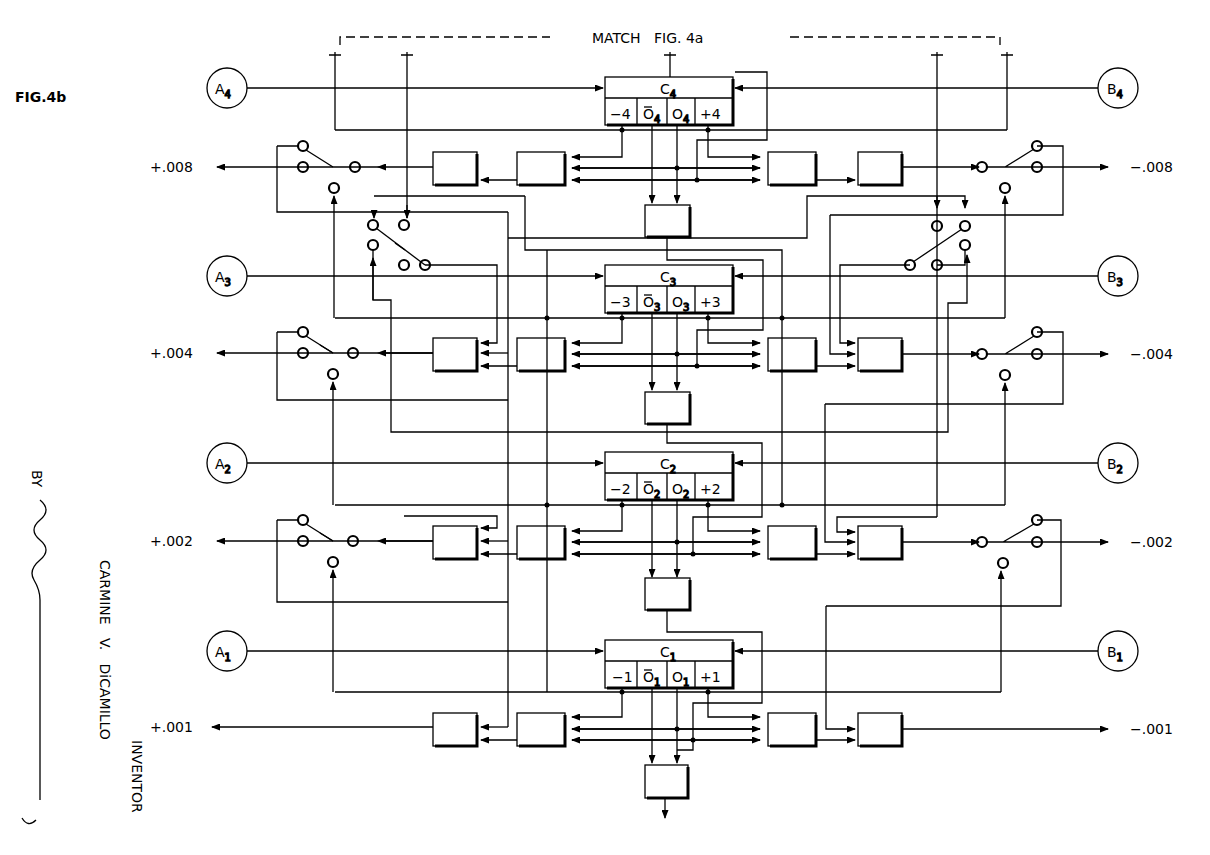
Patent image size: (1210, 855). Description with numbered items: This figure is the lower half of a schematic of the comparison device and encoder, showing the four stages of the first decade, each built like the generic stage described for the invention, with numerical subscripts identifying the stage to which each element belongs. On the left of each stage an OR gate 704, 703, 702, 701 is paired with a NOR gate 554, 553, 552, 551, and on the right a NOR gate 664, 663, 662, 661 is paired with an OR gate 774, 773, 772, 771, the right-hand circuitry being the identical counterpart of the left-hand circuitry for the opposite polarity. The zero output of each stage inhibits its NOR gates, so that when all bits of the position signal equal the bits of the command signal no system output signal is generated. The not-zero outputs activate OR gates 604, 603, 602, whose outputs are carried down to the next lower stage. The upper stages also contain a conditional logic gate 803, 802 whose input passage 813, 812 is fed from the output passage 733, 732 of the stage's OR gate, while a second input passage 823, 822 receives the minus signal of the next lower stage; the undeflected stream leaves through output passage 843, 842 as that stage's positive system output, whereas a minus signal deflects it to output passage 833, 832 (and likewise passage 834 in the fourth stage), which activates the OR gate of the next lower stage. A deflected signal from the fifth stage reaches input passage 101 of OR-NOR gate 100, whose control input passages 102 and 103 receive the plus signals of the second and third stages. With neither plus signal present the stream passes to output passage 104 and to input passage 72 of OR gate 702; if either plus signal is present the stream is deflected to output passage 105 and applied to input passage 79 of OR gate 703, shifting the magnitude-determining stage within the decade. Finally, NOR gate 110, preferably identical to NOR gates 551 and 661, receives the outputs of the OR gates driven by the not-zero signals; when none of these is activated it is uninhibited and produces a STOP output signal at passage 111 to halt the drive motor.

The OR gate 704 is at (470, 152).
The NOR gate 554 is at (540, 185).
The OR gate 604 is at (690, 222).
The NOR gate 664 is at (790, 185).
The OR gate 774 is at (888, 152).
The output passage 834 is at (312, 131).
The OR gate 703 is at (455, 371).
The NOR gate 553 is at (540, 371).
The OR gate 603 is at (690, 408).
The NOR gate 663 is at (775, 371).
The OR gate 773 is at (875, 371).
The output passage 833 is at (316, 319).
The conditional logic gate 803 is at (325, 340).
The output passage 843 is at (298, 356).
The input passage 823 is at (328, 378).
The input passage 813 is at (352, 360).
The output passage 733 is at (418, 356).
The input passage 79 is at (484, 338).
The OR gate 702 is at (455, 559).
The NOR gate 552 is at (540, 559).
The OR gate 602 is at (690, 596).
The NOR gate 662 is at (780, 559).
The OR gate 772 is at (880, 559).
The output passage 832 is at (316, 507).
The conditional logic gate 802 is at (325, 528).
The output passage 842 is at (298, 544).
The input passage 822 is at (328, 566).
The input passage 812 is at (352, 548).
The output passage 732 is at (410, 544).
The input passage 72 is at (488, 512).
The OR gate 701 is at (445, 746).
The NOR gate 551 is at (530, 746).
The NOR gate 661 is at (780, 746).
The OR gate 771 is at (880, 746).
The OR-NOR gate 100 is at (414, 244).
The input passage 101 is at (410, 225).
The input passage 102 is at (368, 244).
The input passage 103 is at (368, 225).
The output passage 104 is at (407, 272).
The output passage 105 is at (430, 270).
The NOR gate 110 is at (688, 786).
The passage 111 is at (670, 814).